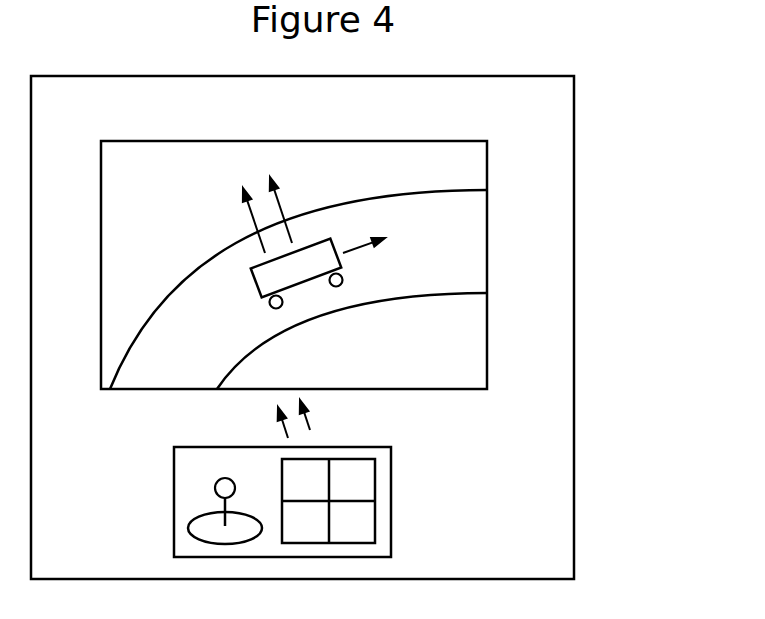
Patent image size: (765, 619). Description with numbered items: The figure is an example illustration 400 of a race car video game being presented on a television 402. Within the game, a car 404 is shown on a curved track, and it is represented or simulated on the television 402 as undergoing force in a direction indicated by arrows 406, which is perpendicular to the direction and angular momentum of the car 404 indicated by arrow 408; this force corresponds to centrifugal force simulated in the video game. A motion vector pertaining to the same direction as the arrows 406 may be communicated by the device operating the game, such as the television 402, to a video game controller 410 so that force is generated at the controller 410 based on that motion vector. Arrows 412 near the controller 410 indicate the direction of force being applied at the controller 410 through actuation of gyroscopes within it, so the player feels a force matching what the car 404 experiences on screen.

The illustration 400 is at (588, 122).
The television 402 is at (487, 141).
The car 404 is at (302, 288).
The arrows 406 is at (283, 205).
The arrow 408 is at (380, 245).
The video game controller 410 is at (393, 476).
The arrows 412 is at (312, 430).